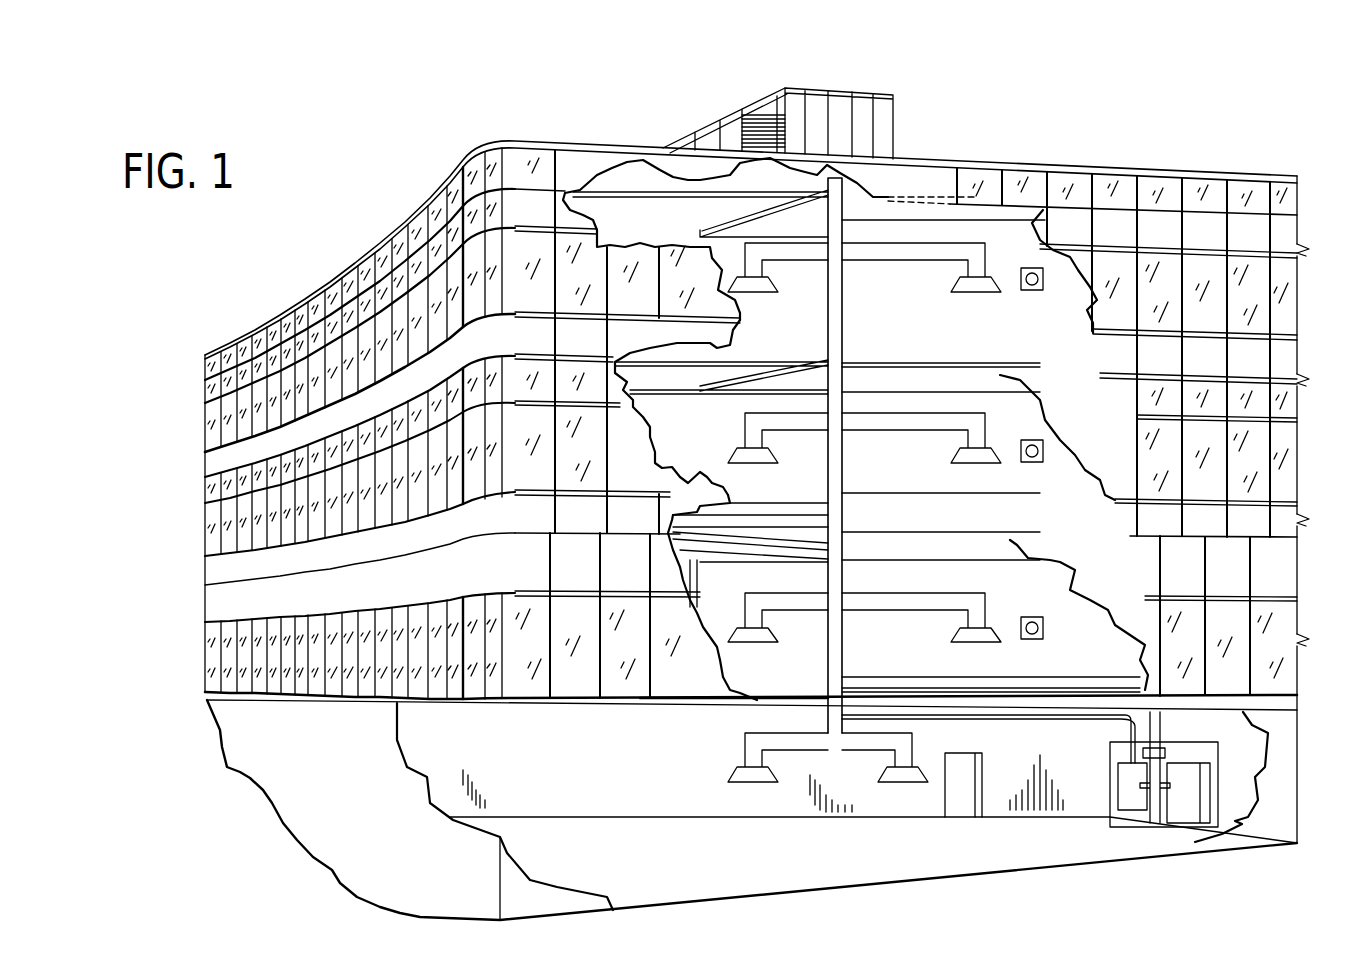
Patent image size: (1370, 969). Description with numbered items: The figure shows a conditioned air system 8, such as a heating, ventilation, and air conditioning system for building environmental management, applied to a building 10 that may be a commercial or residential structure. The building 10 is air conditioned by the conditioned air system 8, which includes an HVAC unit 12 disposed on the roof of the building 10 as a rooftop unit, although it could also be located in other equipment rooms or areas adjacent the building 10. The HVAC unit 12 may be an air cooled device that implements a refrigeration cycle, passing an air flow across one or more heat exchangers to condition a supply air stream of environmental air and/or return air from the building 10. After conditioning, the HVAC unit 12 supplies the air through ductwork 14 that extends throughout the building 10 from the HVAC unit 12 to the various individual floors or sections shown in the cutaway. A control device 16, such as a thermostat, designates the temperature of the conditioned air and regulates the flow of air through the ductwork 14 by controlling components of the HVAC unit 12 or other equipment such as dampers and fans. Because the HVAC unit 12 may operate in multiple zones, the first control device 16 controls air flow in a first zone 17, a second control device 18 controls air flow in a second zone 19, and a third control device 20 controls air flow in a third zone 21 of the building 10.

The conditioned air system 8 is at (887, 47).
The building 10 is at (1160, 173).
The HVAC unit 12 is at (745, 108).
The ductwork 14 is at (843, 293).
The control device 16 is at (1033, 294).
The first zone 17 is at (1010, 243).
The second control device 18 is at (1033, 465).
The second zone 19 is at (940, 480).
The third control device 20 is at (1033, 642).
The third zone 21 is at (1040, 603).